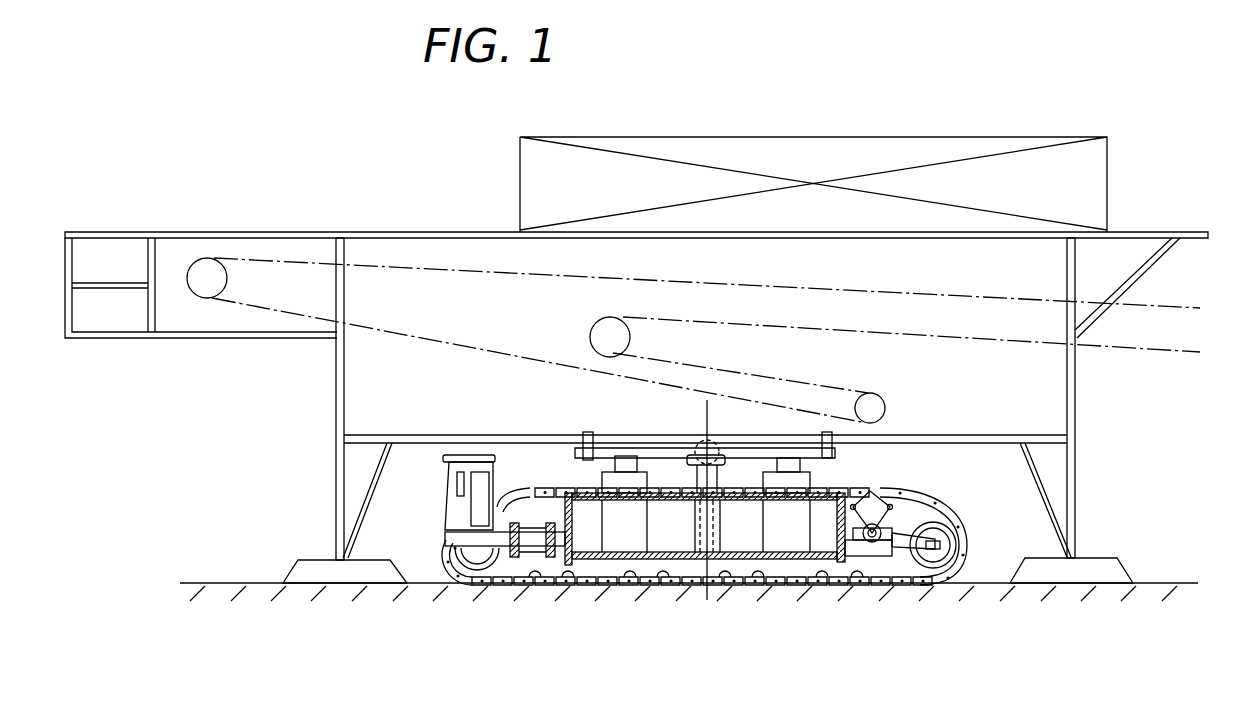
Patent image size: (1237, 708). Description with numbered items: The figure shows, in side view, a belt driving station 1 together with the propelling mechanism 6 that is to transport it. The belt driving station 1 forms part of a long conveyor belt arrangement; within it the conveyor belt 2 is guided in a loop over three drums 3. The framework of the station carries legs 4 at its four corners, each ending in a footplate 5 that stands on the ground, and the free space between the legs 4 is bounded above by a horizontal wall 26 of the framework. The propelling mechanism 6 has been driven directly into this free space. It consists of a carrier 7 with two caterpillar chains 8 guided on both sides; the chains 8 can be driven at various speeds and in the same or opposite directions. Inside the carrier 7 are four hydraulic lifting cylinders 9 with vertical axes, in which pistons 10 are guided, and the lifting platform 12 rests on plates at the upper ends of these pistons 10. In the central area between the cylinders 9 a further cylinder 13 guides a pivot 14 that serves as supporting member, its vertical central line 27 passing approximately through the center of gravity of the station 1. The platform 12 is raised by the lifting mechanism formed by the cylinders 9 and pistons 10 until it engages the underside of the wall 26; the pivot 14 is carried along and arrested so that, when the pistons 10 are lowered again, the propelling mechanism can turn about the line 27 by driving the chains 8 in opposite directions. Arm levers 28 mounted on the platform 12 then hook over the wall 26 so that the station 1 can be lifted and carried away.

The belt driving station 1 is at (322, 210).
The conveyor belt 2 is at (828, 287).
The drums 3 is at (220, 279).
The legs 4 is at (336, 483).
The footplates 5 is at (300, 572).
The propelling mechanism 6 is at (540, 612).
The carrier 7 is at (672, 548).
The caterpillar chains 8 is at (905, 493).
The cylinders 9 is at (626, 526).
The pistons 10 is at (796, 466).
The lifting platform 12 is at (628, 441).
The cylinder 13 is at (722, 548).
The pivot 14 is at (725, 460).
The horizontal wall 26 is at (422, 440).
The vertical central line 27 is at (703, 417).
The arm levers 28 is at (585, 433).